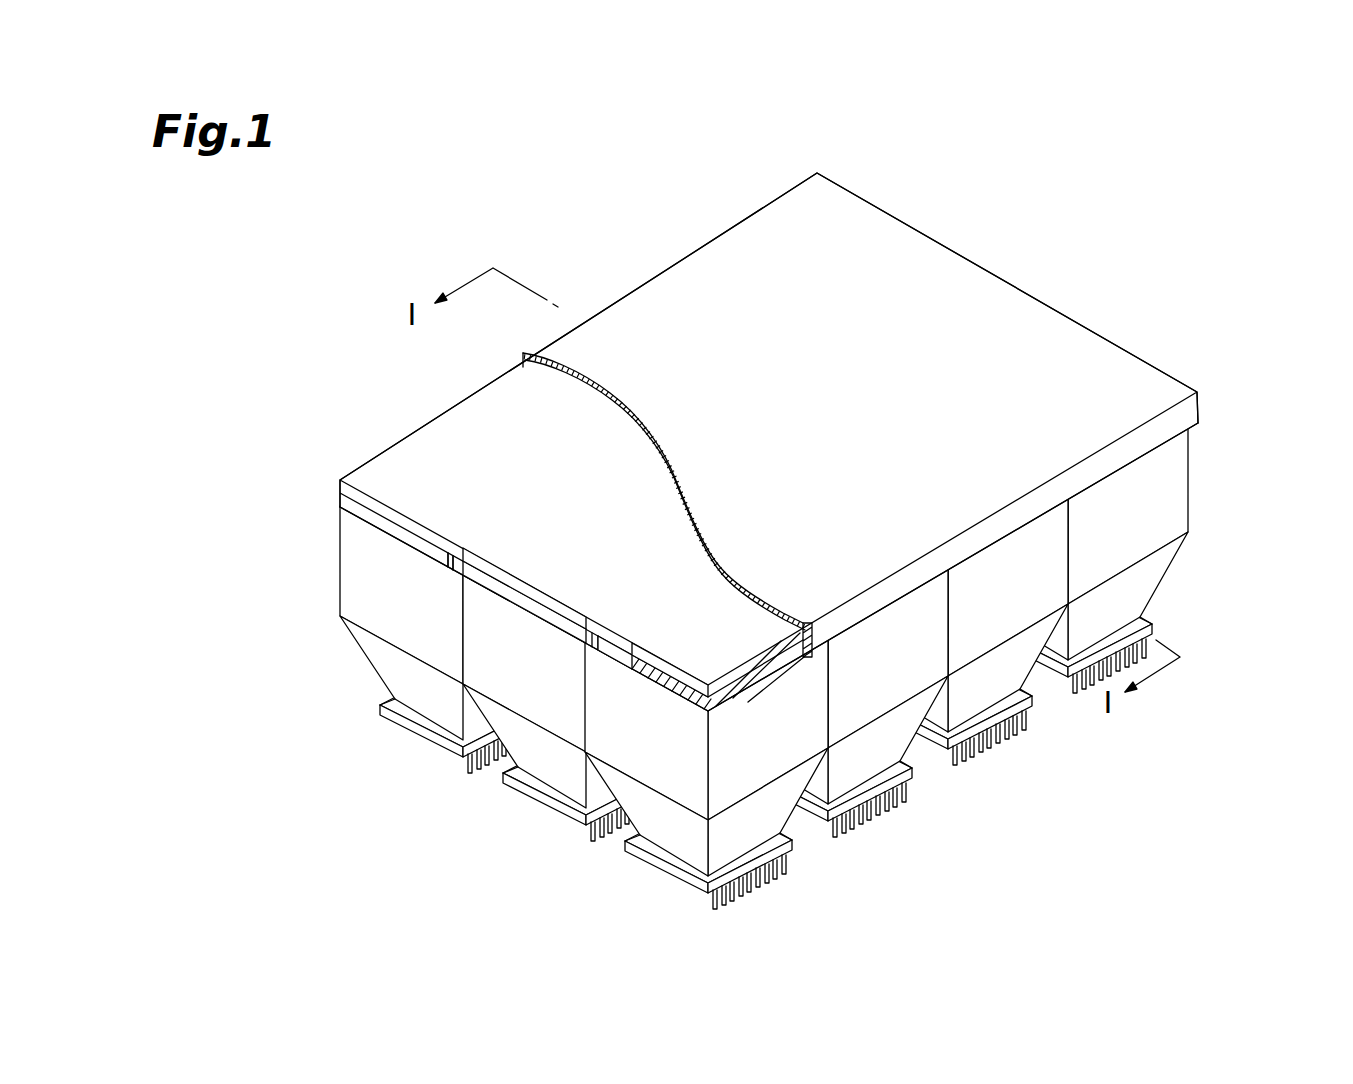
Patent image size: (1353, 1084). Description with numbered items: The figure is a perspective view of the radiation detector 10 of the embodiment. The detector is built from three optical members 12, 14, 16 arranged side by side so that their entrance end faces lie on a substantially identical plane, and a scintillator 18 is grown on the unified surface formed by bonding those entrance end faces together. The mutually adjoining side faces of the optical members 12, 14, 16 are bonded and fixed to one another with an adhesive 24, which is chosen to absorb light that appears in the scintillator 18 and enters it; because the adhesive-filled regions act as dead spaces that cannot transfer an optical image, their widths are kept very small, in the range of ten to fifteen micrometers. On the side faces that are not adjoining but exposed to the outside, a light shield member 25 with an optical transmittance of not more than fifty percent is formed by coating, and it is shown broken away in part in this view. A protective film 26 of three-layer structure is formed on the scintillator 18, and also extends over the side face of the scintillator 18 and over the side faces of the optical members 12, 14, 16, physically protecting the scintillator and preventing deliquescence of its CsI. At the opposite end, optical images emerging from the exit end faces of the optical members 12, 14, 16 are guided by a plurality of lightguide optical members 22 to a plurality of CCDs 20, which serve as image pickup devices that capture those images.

The radiation detector 10 is at (766, 529).
The optical member 12 is at (367, 513).
The optical member 14 is at (497, 588).
The optical member 16 is at (615, 652).
The scintillator 18 is at (538, 595).
The CCD 20 is at (1157, 613).
The lightguide optical member 22 is at (1187, 498).
The adhesive 24 is at (447, 562).
The light shield member 25 is at (690, 680).
The protective film 26 is at (890, 233).